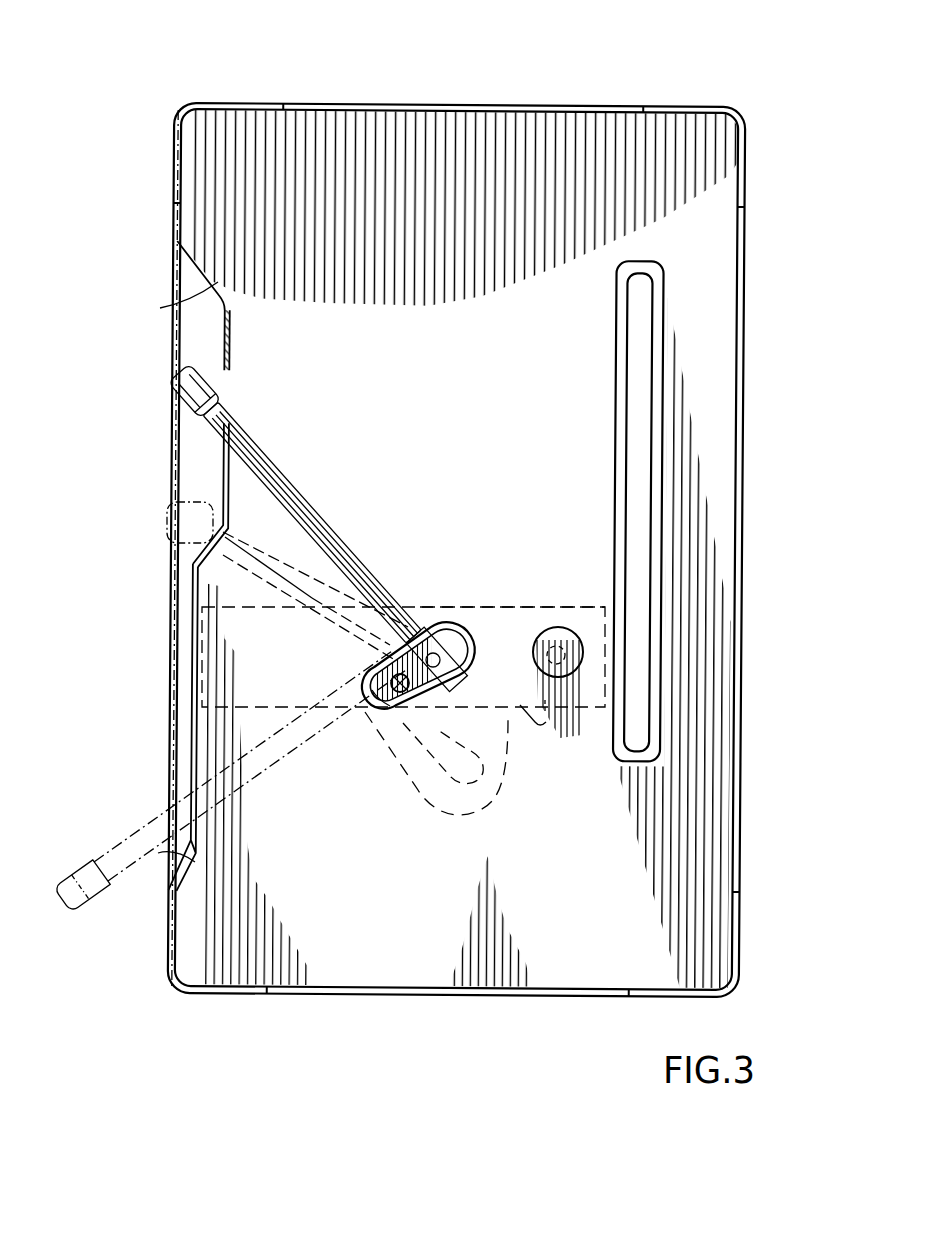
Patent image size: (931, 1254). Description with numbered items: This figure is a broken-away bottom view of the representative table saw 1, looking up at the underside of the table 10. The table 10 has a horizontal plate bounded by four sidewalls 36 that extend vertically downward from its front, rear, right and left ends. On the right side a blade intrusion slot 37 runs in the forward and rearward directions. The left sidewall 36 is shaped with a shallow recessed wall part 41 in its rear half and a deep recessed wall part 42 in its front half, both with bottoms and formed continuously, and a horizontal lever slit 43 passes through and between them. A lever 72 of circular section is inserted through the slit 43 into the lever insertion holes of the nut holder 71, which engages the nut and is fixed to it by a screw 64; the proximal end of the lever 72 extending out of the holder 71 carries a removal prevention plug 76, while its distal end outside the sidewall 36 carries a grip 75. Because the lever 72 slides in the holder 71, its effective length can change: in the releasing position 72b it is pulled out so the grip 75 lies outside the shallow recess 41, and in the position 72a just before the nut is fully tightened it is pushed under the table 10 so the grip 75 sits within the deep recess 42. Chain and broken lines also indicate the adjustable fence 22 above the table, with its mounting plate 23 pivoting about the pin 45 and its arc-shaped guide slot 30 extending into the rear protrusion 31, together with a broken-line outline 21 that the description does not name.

The electronic device 1 is at (731, 80).
The table 10 is at (531, 103).
The sidewalls 36 is at (438, 105).
The blade intrusion slot 37 is at (634, 532).
The deep recessed wall part 42 is at (218, 468).
The horizontal lever slit 43 is at (193, 632).
The shallow recessed wall part 41 is at (195, 745).
The lever 72 is at (295, 492).
The grip 75 is at (182, 383).
The lever in position just before completion of tightening 72a is at (293, 577).
The lever in releasing position 72b is at (243, 758).
The mounting area outline 21 is at (421, 600).
The adjustable fence 22 is at (485, 607).
The pin 45 is at (558, 655).
The mounting plate 23 is at (572, 714).
The removal prevention plug 76 is at (450, 702).
The screw 64 is at (376, 680).
The nut holder 71 is at (378, 704).
The guide slot 30 is at (423, 750).
The rear protrusion 31 is at (473, 817).